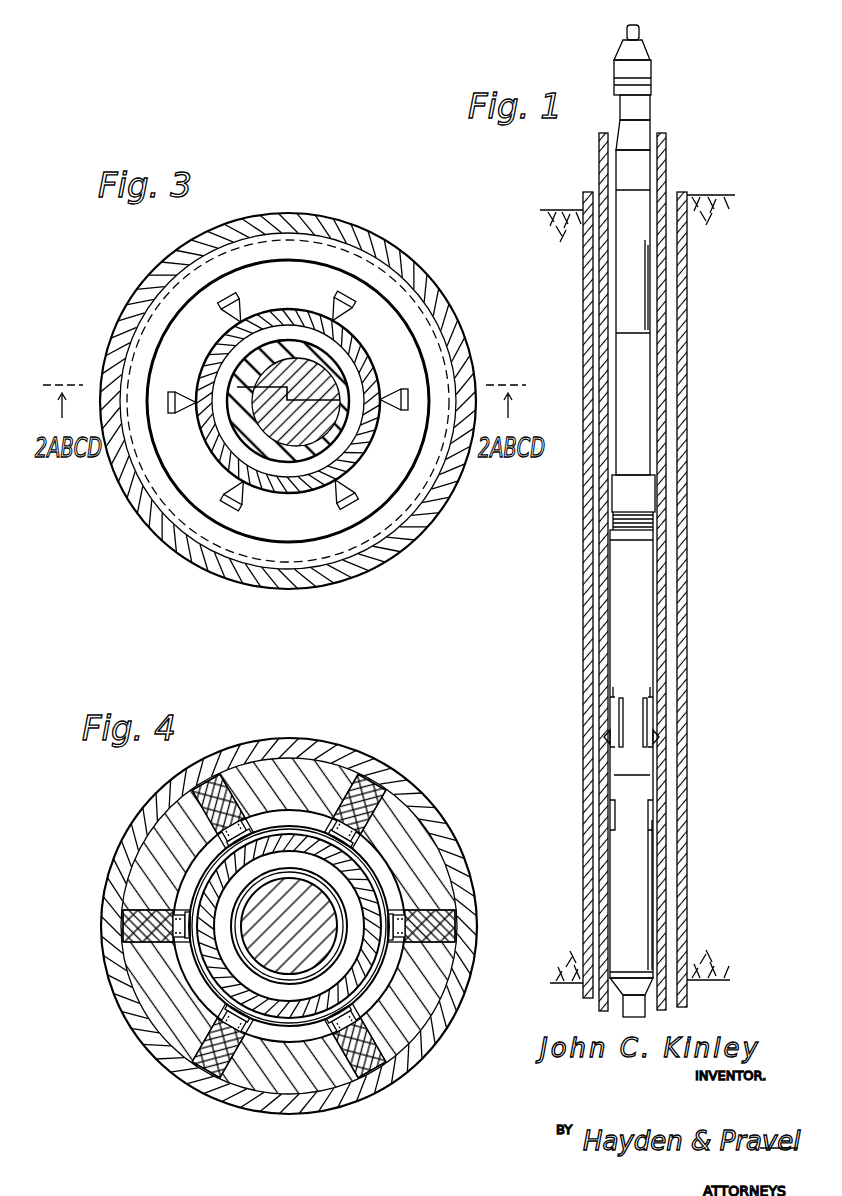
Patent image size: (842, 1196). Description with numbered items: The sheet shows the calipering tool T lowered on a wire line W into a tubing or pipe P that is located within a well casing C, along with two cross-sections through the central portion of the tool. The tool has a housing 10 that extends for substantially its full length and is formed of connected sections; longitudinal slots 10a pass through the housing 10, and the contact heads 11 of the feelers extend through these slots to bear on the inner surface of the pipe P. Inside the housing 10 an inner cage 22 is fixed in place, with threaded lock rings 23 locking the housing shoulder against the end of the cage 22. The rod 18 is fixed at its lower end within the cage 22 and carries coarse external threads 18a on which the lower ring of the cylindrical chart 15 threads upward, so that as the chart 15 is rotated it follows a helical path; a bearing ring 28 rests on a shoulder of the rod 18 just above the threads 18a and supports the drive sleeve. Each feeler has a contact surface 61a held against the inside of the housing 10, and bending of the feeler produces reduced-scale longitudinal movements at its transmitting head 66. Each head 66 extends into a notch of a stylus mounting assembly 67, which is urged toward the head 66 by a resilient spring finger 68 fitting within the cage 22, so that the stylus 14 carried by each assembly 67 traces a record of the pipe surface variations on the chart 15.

In FIG. 1, the wire line W is at (640, 28).
In FIG. 1, the tubing or pipe P is at (665, 303).
In FIG. 1, the calipering tool T is at (652, 412).
In FIG. 1, the well casing C is at (687, 518).
In FIG. 1, the housing 10 is at (657, 601).
In FIG. 3, the housing 10 is at (157, 293).
In FIG. 4, the housing 10 is at (290, 733).
In FIG. 1, the slots or longitudinal openings 10a is at (647, 710).
In FIG. 1, the contact heads 11 is at (660, 737).
In FIG. 3, the threaded lock rings 23 is at (130, 315).
In FIG. 3, the recorder member or stylus 14 is at (193, 400).
In FIG. 3, the chart or recording means 15 is at (222, 451).
In FIG. 4, the chart or recording means 15 is at (368, 892).
In FIG. 3, the rod 18 is at (310, 417).
In FIG. 4, the rod 18 is at (325, 940).
In FIG. 3, the bearing ring 28 is at (283, 350).
In FIG. 4, the inner cage 22 is at (149, 862).
In FIG. 4, the stylus mounting assembly 67 is at (325, 812).
In FIG. 4, the contact surface 61a is at (380, 773).
In FIG. 4, the transmitting head or point 66 is at (350, 837).
In FIG. 4, the resilient spring finger 68 is at (350, 848).
In FIG. 4, the external threads 18a is at (338, 961).